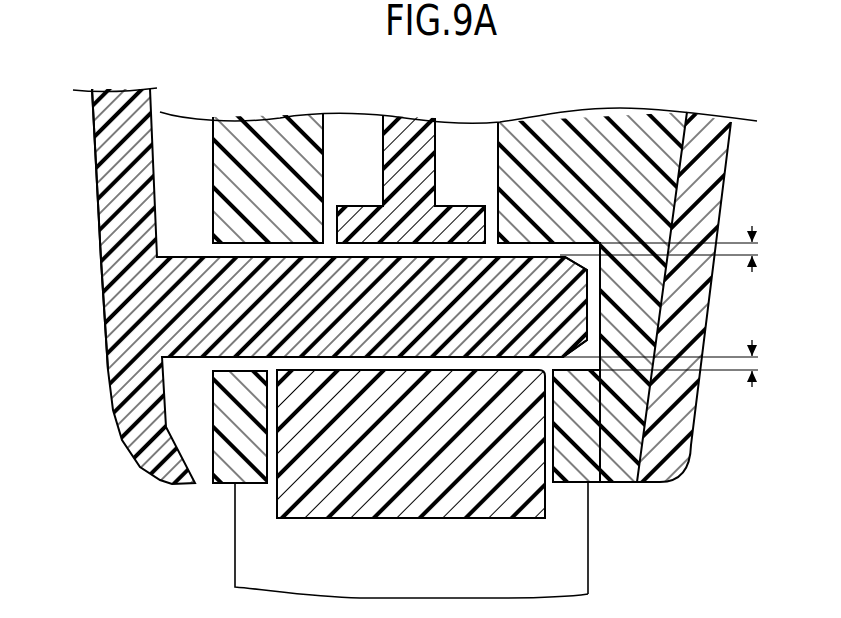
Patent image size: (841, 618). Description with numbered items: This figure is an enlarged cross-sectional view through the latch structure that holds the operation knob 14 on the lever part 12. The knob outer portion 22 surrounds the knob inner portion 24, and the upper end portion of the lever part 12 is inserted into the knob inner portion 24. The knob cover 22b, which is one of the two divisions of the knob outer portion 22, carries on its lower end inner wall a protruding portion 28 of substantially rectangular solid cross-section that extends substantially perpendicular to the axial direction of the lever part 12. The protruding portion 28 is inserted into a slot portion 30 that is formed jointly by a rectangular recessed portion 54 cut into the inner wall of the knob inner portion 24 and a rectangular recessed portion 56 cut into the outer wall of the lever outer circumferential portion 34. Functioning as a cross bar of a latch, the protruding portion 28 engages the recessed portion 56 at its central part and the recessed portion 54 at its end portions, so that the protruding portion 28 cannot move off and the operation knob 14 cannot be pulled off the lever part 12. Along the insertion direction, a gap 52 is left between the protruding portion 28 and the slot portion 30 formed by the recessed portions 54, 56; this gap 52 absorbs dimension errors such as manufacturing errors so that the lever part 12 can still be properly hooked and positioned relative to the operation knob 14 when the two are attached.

The lever part 12 is at (221, 563).
The operation knob 14 is at (96, 307).
The knob outer portion 22 is at (62, 229).
The knob cover 22b is at (97, 205).
The knob inner portion 24 is at (206, 171).
The protruding portion 28 is at (594, 302).
The slot portion 30 is at (490, 247).
The lever outer circumferential portion 34 is at (595, 557).
The gap 52 is at (679, 306).
The recessed portion 54 is at (237, 372).
The recessed portion 56 is at (492, 370).